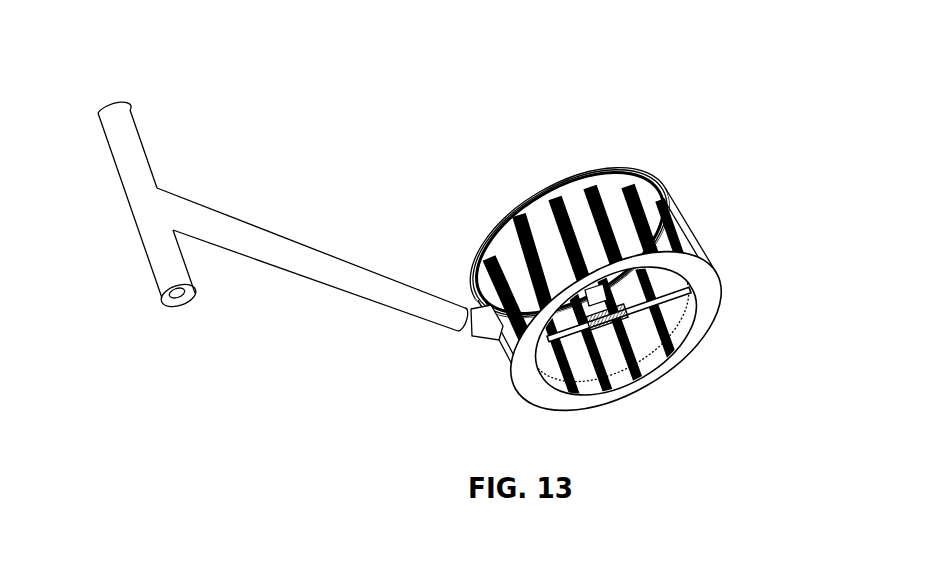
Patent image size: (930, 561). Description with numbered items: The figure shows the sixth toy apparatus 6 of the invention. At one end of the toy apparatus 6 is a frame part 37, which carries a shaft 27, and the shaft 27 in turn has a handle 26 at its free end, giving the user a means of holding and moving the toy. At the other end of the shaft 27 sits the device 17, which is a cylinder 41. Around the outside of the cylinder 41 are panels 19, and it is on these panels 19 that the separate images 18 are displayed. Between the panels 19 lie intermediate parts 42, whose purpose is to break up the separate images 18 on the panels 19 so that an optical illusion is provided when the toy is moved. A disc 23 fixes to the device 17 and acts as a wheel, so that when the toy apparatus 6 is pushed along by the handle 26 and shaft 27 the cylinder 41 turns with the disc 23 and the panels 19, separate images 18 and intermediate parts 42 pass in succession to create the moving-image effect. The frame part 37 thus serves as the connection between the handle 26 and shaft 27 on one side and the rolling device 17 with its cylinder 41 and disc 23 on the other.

The toy apparatus 6 is at (386, 86).
The device 17 is at (731, 139).
The separate images 18 is at (588, 238).
The panels 19 is at (613, 212).
The discs 23 is at (670, 360).
The handle 26 is at (130, 205).
The shaft 27 is at (309, 262).
The frame part 37 is at (487, 318).
The cylinder 41 is at (650, 317).
The intermediate parts 42 is at (482, 262).